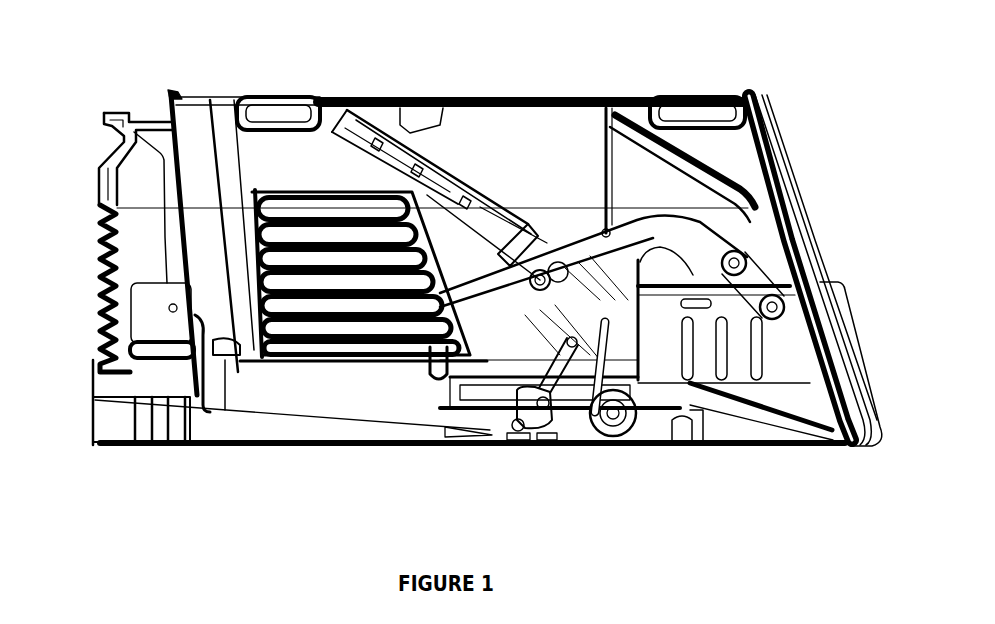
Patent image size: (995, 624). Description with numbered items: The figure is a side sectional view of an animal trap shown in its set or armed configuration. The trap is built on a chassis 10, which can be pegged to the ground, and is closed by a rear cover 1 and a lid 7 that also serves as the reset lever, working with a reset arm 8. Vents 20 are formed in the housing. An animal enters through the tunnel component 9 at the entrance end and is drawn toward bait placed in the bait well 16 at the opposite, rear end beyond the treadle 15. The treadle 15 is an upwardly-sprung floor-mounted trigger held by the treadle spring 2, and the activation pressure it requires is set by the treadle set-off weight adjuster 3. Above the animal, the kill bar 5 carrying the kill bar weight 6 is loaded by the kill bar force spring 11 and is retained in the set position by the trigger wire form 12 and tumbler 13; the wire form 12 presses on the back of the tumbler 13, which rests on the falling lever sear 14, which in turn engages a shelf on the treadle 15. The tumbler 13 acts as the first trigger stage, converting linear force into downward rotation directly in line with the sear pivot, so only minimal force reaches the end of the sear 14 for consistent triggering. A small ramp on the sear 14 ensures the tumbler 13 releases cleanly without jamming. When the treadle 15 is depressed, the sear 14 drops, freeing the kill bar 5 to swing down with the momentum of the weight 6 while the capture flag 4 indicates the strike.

The rear cover 1 is at (138, 160).
The treadle spring 2 is at (211, 108).
The treadle set-off weight adjuster 3 is at (234, 108).
The capture flag 4 is at (285, 108).
The kill bar 5 is at (432, 197).
The kill bar weight 6 is at (460, 190).
The lid (reset lever) 7 is at (507, 123).
The reset arm 8 is at (673, 227).
The tunnel component 9 is at (842, 323).
The chassis 10 is at (758, 433).
The kill bar force spring 11 is at (660, 423).
The trigger wire form 12 is at (603, 423).
The tumbler 13 is at (548, 405).
The falling lever sear 14 is at (492, 428).
The treadle 15 is at (215, 395).
The bait well 16 is at (155, 372).
The vents 20 is at (342, 305).